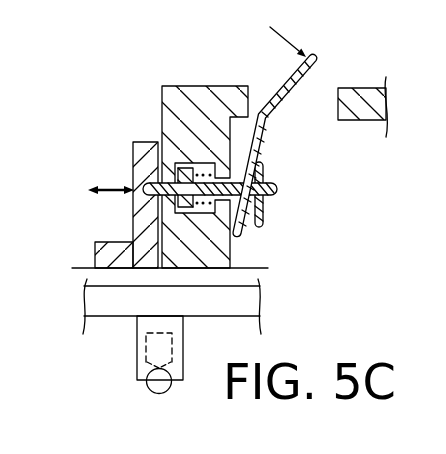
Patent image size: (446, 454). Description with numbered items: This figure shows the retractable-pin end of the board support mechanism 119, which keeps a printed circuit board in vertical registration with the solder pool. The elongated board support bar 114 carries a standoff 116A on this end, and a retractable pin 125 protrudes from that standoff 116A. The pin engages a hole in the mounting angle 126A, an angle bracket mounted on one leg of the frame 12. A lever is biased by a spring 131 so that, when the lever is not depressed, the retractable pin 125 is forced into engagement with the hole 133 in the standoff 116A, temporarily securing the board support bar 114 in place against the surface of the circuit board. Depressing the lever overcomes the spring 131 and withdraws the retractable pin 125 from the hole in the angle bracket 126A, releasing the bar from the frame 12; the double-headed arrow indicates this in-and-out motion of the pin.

The frame 12 is at (236, 268).
The board support bar 114 is at (356, 97).
The standoff 116A is at (143, 148).
The board support mechanism 119 is at (139, 70).
The retractable pin 125 is at (157, 190).
The mounting angle 126A is at (104, 256).
The spring 131 is at (199, 163).
The hole 133 is at (160, 188).